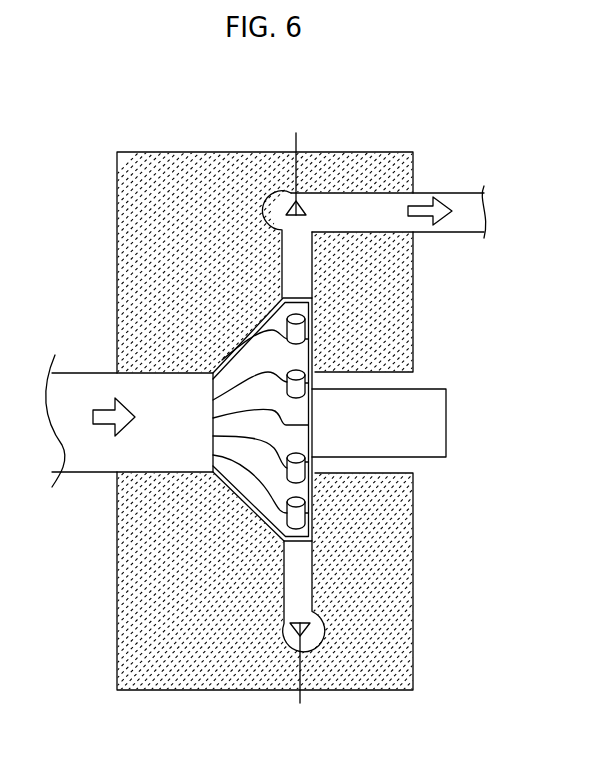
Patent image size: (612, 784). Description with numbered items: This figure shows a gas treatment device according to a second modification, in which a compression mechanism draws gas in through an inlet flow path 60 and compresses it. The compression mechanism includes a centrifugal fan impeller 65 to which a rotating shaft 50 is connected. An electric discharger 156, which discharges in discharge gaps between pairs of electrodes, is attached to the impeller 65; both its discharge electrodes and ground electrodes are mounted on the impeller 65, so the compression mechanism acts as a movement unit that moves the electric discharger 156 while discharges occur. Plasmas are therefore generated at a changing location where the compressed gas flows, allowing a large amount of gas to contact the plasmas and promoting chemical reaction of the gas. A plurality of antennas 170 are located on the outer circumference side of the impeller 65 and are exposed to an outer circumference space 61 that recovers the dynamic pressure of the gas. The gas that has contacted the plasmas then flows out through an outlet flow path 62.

The rotating shaft 50 is at (430, 418).
The inlet flow path 60 is at (72, 378).
The outer circumference space 61 is at (283, 196).
The outlet flow path 62 is at (367, 207).
The centrifugal fan impeller 65 is at (245, 366).
The electric discharger 156 is at (302, 461).
The antennas 170 is at (305, 210).